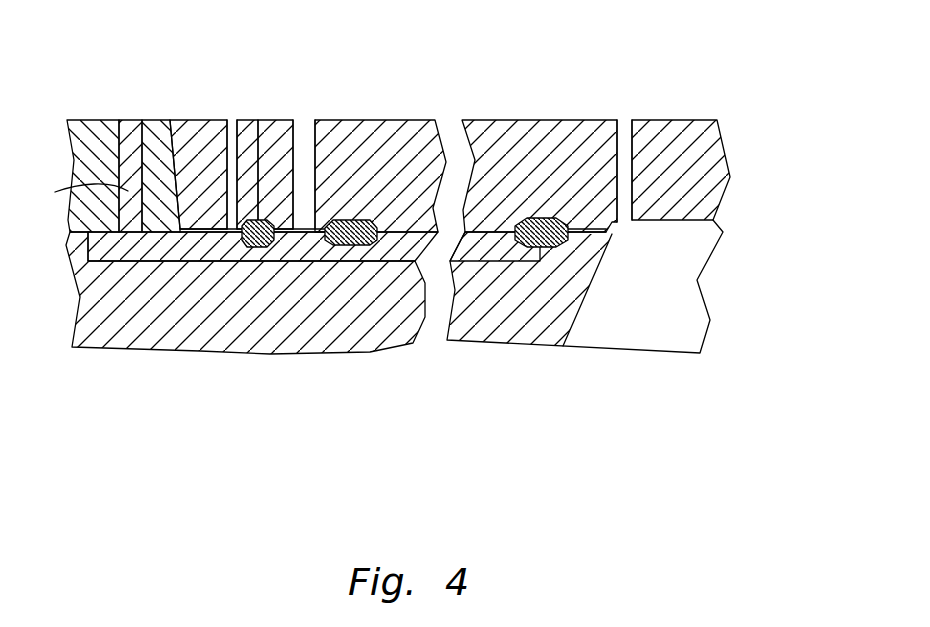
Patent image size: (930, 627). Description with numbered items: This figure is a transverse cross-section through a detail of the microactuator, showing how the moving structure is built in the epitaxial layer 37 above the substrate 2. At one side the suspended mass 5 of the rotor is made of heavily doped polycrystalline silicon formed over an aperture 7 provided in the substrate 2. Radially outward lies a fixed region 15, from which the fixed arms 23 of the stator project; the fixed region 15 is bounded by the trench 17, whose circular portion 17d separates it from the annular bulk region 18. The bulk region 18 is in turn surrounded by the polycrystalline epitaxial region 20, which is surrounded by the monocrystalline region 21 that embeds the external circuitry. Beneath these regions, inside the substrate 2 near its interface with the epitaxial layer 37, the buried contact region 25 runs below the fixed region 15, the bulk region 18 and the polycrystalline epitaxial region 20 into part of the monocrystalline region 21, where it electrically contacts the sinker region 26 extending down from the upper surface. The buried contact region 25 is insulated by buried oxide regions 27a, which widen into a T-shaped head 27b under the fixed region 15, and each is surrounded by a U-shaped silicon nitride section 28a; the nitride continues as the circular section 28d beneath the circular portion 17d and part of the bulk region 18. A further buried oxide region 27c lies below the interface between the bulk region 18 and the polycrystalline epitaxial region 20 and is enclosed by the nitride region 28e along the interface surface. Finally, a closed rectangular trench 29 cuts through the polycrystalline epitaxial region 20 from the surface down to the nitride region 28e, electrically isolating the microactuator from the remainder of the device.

The substrate 2 is at (113, 330).
The suspended mass 5 is at (690, 153).
The aperture 7 is at (660, 333).
The fixed regions 15 is at (393, 145).
The trench 17 is at (627, 110).
The circular portion of the trench 17d is at (305, 116).
The bulk region 18 is at (283, 140).
The polycrystalline epitaxial region 20 is at (200, 140).
The monocrystalline region 21 is at (93, 140).
The fixed arms 23 is at (507, 145).
The buried contact region 25 is at (173, 248).
The sinker region 26 is at (125, 140).
The buried oxide region 27a is at (533, 247).
The head of the buried oxide region 27b is at (358, 245).
The buried oxide region 27c is at (260, 247).
The U-shaped section of the silicon nitride insulation region 28a is at (590, 232).
The circular section of the silicon nitride insulation region 28d is at (302, 240).
The nitride region 28e is at (223, 233).
The trench 29 is at (229, 116).
The epitaxial layer 37 is at (768, 177).